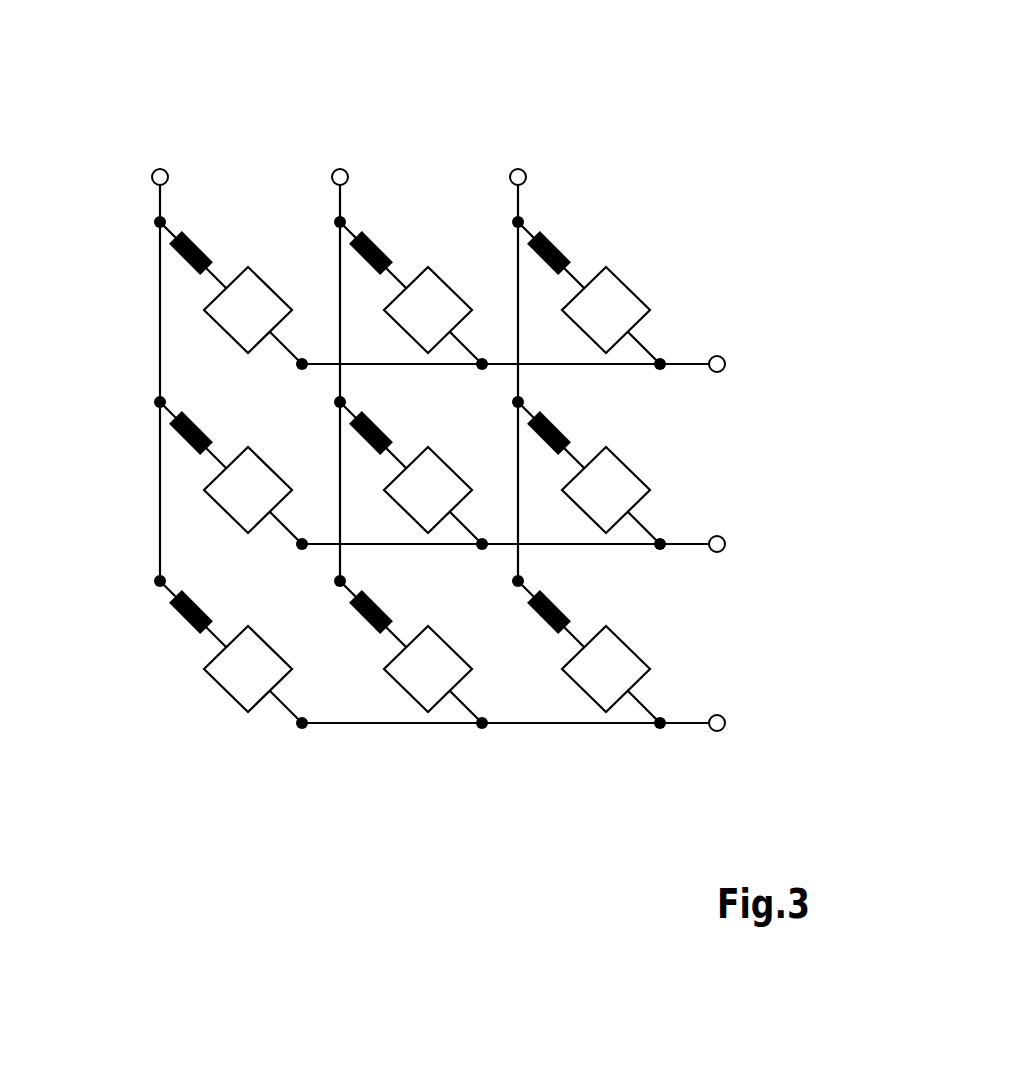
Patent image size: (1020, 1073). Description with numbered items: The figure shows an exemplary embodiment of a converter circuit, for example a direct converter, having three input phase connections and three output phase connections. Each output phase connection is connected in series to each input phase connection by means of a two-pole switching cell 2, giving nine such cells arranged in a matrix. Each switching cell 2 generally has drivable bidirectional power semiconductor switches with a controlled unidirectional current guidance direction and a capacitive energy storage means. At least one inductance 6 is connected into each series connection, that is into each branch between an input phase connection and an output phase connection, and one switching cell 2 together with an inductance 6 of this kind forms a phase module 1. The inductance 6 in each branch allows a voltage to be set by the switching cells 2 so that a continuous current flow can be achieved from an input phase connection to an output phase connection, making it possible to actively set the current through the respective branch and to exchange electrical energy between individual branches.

The phase module 1 is at (237, 237).
The switching cell 2 is at (575, 678).
The inductance 6 is at (530, 607).